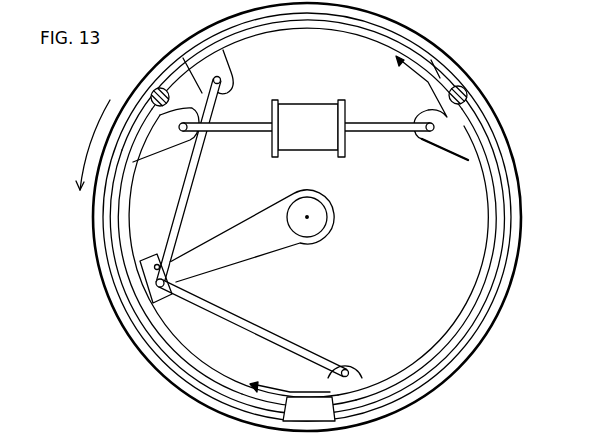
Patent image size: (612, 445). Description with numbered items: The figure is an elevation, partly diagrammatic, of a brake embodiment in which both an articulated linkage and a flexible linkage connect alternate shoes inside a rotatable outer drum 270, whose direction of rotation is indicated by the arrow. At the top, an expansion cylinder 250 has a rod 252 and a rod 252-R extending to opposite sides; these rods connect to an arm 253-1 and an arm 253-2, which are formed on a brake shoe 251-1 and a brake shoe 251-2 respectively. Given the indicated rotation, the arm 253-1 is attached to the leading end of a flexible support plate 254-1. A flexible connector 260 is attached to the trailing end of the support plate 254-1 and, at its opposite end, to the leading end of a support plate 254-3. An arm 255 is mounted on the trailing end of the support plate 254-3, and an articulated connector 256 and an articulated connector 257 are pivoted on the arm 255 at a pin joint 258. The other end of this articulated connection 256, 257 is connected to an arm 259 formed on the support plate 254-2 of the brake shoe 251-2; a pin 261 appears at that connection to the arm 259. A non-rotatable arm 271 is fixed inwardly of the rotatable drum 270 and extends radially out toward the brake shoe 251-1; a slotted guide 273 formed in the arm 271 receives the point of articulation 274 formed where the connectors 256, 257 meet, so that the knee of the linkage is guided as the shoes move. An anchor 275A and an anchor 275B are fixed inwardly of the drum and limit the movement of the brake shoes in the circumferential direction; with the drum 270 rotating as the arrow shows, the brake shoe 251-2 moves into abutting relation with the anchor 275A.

The expansion cylinder 250 is at (327, 146).
The brake shoe 251-1 is at (195, 375).
The brake shoe 251-2 is at (495, 272).
The rod 252 is at (247, 130).
The rod 252-R is at (385, 127).
The arm 253-1 is at (163, 143).
The arm 253-2 is at (445, 143).
The flexible support plate 254-1 is at (125, 195).
The support plate 254-2 is at (483, 280).
The support plate 254-3 is at (363, 42).
The arm 255 is at (228, 69).
The articulated connector 256 is at (197, 180).
The articulated connector 257 is at (253, 325).
The pin joint 258 is at (222, 80).
The arm 259 is at (367, 377).
The flexible connector 260 is at (460, 302).
The pin 261 is at (350, 362).
The outer drum 270 is at (92, 213).
The non-rotatable arm 271 is at (300, 250).
The slotted guide 273 is at (158, 255).
The point of articulation 274 is at (177, 272).
The anchor 275A is at (460, 86).
The anchor 275B is at (155, 88).